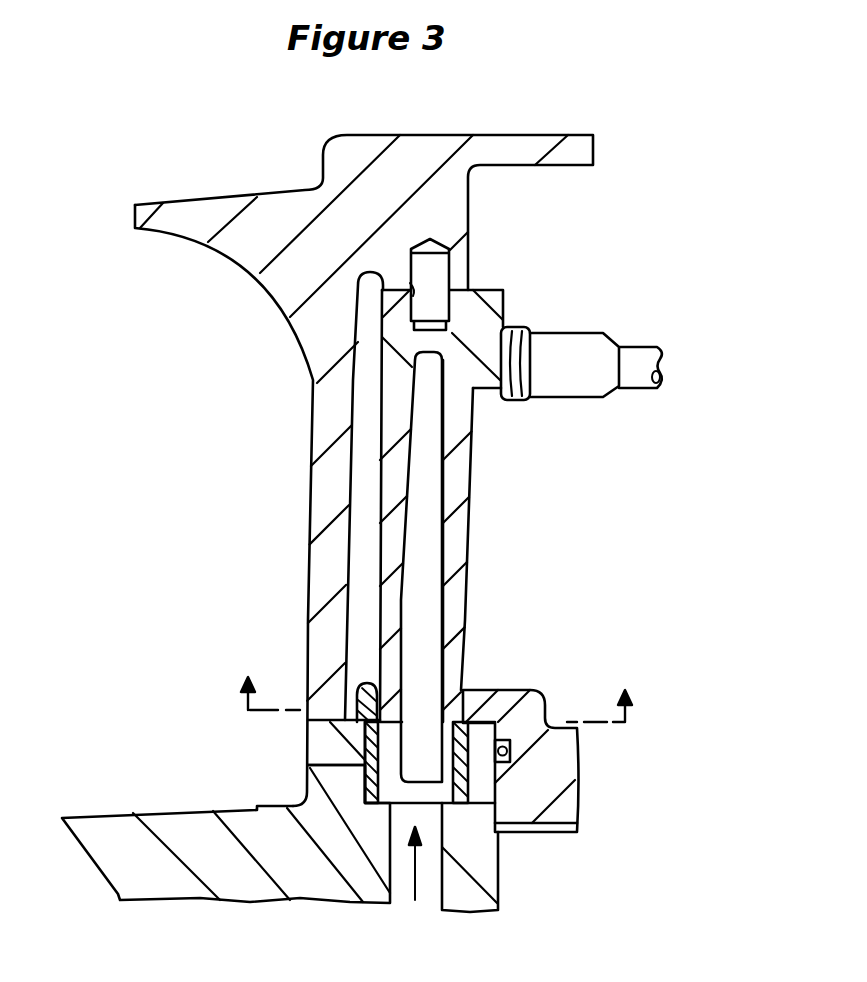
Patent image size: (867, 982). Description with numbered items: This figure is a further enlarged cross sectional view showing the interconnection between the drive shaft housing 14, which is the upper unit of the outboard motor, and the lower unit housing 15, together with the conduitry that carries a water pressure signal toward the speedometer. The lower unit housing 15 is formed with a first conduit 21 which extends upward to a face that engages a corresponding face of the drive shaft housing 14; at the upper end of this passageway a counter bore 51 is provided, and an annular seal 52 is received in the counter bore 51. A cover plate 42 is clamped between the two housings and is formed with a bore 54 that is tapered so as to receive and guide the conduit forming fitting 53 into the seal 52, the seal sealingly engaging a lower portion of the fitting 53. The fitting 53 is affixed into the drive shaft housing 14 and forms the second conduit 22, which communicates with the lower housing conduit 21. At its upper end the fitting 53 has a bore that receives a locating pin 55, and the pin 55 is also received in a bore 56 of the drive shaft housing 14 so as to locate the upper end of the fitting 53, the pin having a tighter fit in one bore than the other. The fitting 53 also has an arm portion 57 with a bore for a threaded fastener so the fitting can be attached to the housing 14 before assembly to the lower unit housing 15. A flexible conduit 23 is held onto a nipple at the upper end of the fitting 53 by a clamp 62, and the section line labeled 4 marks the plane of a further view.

The drive shaft housing 14 is at (296, 205).
The lower unit housing 15 is at (143, 838).
The first conduit 21 is at (460, 910).
The second conduit 22 is at (428, 563).
The flexible conduit 23 is at (642, 353).
The cover plate 42 is at (553, 765).
The counter bore 51 is at (367, 764).
The annular seal 52 is at (468, 782).
The conduit forming fitting 53 is at (472, 527).
The bore 54 is at (367, 686).
The locating pin 55 is at (445, 277).
The bore 56 is at (420, 282).
The arm portion 57 is at (497, 290).
The clamp 62 is at (537, 374).
The section line 4- 4 is at (432, 678).